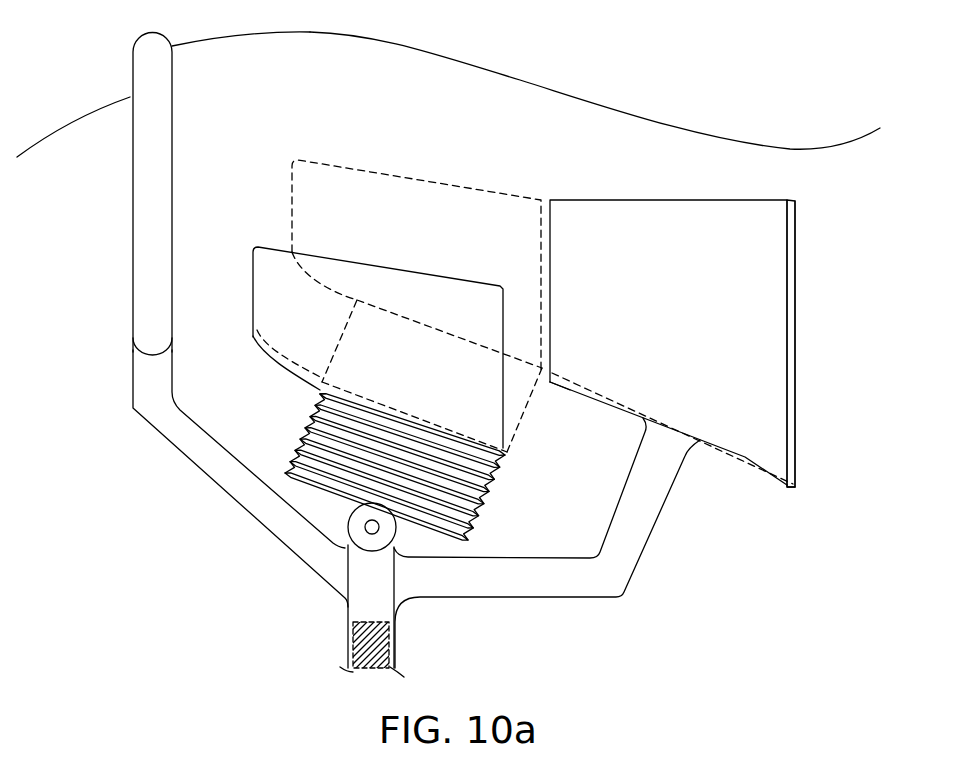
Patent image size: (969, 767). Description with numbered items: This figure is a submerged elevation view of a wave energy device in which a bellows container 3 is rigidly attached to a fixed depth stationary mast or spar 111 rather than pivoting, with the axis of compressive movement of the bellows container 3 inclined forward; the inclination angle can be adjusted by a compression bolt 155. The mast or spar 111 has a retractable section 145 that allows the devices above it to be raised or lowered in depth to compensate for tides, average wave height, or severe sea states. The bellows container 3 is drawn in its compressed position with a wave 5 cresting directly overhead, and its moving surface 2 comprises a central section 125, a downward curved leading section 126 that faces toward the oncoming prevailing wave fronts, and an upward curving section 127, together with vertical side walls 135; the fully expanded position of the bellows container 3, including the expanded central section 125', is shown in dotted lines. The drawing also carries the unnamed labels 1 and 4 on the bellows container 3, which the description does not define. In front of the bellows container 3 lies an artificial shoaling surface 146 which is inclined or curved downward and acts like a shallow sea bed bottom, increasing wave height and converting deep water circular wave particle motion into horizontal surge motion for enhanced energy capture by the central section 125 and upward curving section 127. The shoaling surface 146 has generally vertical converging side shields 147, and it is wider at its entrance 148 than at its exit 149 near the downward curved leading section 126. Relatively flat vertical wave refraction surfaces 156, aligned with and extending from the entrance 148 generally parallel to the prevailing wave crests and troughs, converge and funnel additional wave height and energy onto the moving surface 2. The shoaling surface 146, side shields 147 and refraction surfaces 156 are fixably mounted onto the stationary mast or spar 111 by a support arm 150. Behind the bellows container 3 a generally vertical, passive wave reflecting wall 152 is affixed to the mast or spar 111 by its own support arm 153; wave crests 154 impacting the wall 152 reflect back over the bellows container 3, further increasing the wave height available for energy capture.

The wave 5 is at (445, 58).
The wave crest 154 is at (224, 38).
The wave reflecting wall 152 is at (133, 222).
The support arm 153 is at (172, 446).
The vertical side wall 135 is at (270, 247).
The upward curving section 127 is at (256, 342).
The central section (fully expanded position) 125' is at (449, 325).
The central section 125 is at (414, 415).
The downward curved leading section 126 is at (508, 450).
The spring 1 is at (337, 497).
The moving surface 2 is at (325, 399).
The bellows container 3 is at (299, 443).
The spring second end 4 is at (487, 494).
The compression bolt 155 is at (383, 532).
The mast or spar 111 is at (372, 610).
The retractable section 145 is at (355, 649).
The support arm 150 is at (630, 549).
The side shield 147 is at (645, 200).
The exit 149 is at (552, 373).
The artificial shoaling surface 146 is at (677, 420).
The wave refraction surface 156 is at (797, 343).
The entrance 148 is at (797, 485).